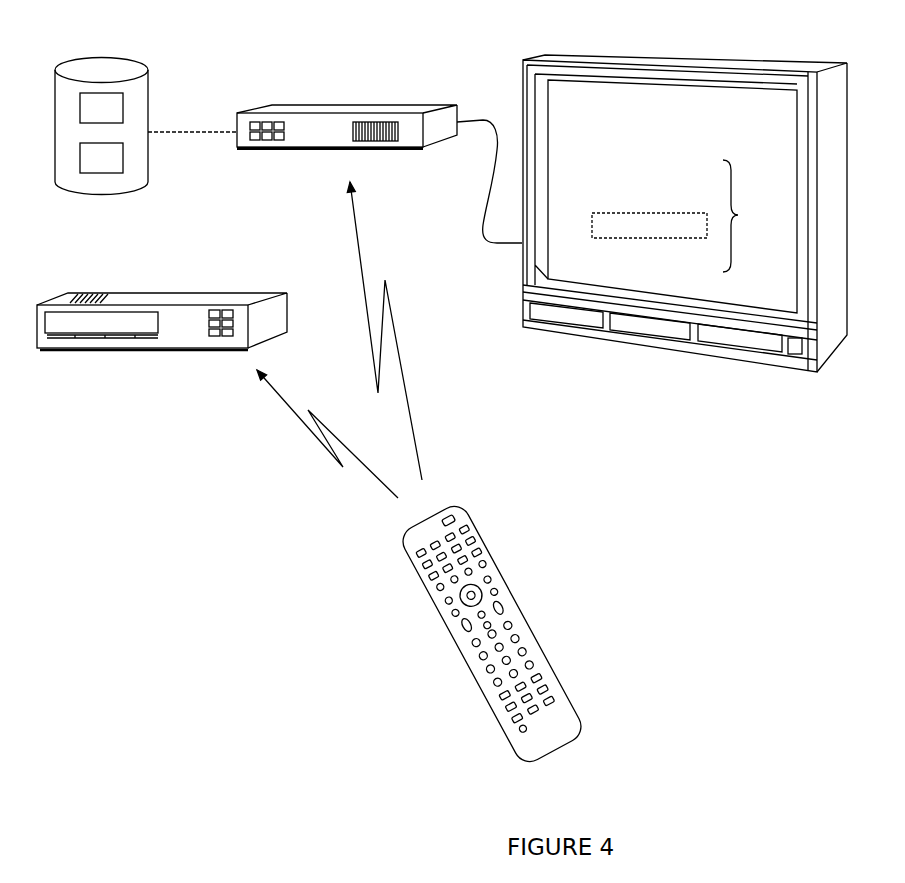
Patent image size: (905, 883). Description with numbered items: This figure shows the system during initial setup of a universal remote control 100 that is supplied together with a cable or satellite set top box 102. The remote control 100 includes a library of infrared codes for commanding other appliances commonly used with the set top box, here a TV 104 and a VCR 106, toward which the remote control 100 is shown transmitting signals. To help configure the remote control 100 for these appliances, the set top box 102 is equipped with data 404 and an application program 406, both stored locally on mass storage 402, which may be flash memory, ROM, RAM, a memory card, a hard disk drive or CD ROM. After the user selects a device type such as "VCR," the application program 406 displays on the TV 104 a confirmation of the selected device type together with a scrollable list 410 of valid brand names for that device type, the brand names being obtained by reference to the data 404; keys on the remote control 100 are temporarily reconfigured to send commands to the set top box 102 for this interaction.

The remote control 100 is at (510, 597).
The set top box 102 is at (303, 103).
The TV 104 is at (692, 230).
The VCR 106 is at (185, 352).
The mass storage 402 is at (102, 55).
The data 404 is at (123, 107).
The application program 406 is at (105, 177).
The scrollable list 410 is at (739, 215).